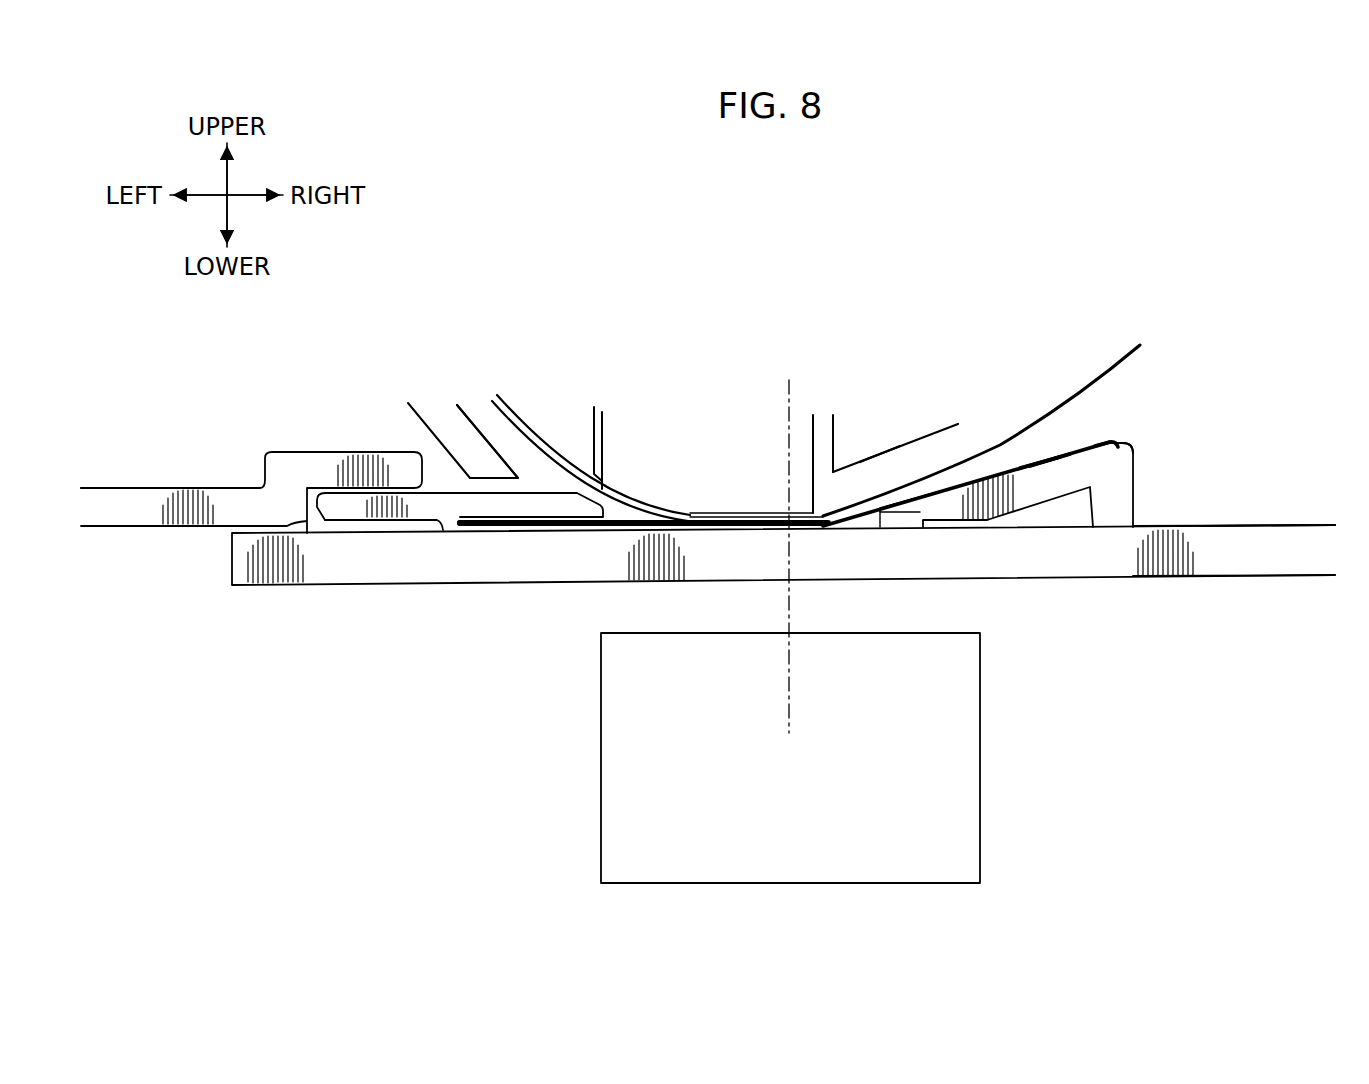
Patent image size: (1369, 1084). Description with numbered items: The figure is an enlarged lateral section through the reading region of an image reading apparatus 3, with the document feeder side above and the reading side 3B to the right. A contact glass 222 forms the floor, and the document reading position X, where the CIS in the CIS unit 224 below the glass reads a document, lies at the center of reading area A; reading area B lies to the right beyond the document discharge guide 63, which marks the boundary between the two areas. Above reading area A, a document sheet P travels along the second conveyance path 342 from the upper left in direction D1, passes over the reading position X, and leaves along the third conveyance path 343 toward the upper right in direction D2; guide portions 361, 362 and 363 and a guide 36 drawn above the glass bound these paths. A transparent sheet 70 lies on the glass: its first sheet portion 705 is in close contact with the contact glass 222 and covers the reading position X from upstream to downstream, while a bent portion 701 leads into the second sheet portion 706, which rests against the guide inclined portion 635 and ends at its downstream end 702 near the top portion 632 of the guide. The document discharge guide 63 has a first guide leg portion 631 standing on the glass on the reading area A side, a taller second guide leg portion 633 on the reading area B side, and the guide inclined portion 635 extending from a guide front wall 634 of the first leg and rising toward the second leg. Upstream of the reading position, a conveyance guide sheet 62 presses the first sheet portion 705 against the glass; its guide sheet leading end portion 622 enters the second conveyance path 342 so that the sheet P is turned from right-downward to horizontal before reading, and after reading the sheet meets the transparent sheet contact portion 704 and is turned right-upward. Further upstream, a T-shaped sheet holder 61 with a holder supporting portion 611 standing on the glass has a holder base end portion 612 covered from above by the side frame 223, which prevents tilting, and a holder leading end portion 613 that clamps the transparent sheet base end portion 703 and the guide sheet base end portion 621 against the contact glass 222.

The fixing device 3 is at (213, 395).
The fixing device housing portion 3B is at (1281, 510).
The platen 36 is at (840, 417).
The first guide 361 is at (440, 425).
The curved guide 362 is at (553, 437).
The outlet guide 363 is at (880, 440).
The second conveyance path 342 is at (517, 450).
The third conveyance path 343 is at (890, 470).
The sheet holder 61 is at (451, 582).
The holder supporting portion 611 is at (450, 531).
The holder base end portion 612 is at (328, 513).
The holder leading end portion 613 is at (580, 531).
The conveyance guide sheet 62 is at (626, 514).
The guide sheet base end portion 621 is at (488, 530).
The guide sheet leading end portion 622 is at (683, 507).
The document discharge guide 63 is at (1060, 528).
The first guide leg portion 631 is at (885, 512).
The guide top portion 632 is at (1125, 447).
The second guide leg portion 633 is at (1125, 519).
The guide front wall 634 is at (903, 530).
The guide inclined portion 635 is at (1033, 468).
The transparent sheet 70 is at (926, 488).
The bent portion 701 is at (833, 528).
The belt end portion 702 is at (1110, 436).
The transparent sheet base end portion 703 is at (517, 530).
The transparent sheet contact portion 704 is at (907, 493).
The first sheet portion 705 is at (757, 530).
The second sheet portion 706 is at (1050, 453).
The contact glass 222 is at (612, 557).
The side frame 223 is at (146, 504).
The CIS unit 224 is at (962, 758).
The document sheet P is at (1135, 360).
The reading area A is at (807, 533).
The reading area B is at (1208, 560).
The document reading position X is at (789, 700).
The inlet direction D1 is at (480, 421).
The outlet direction D2 is at (1103, 357).